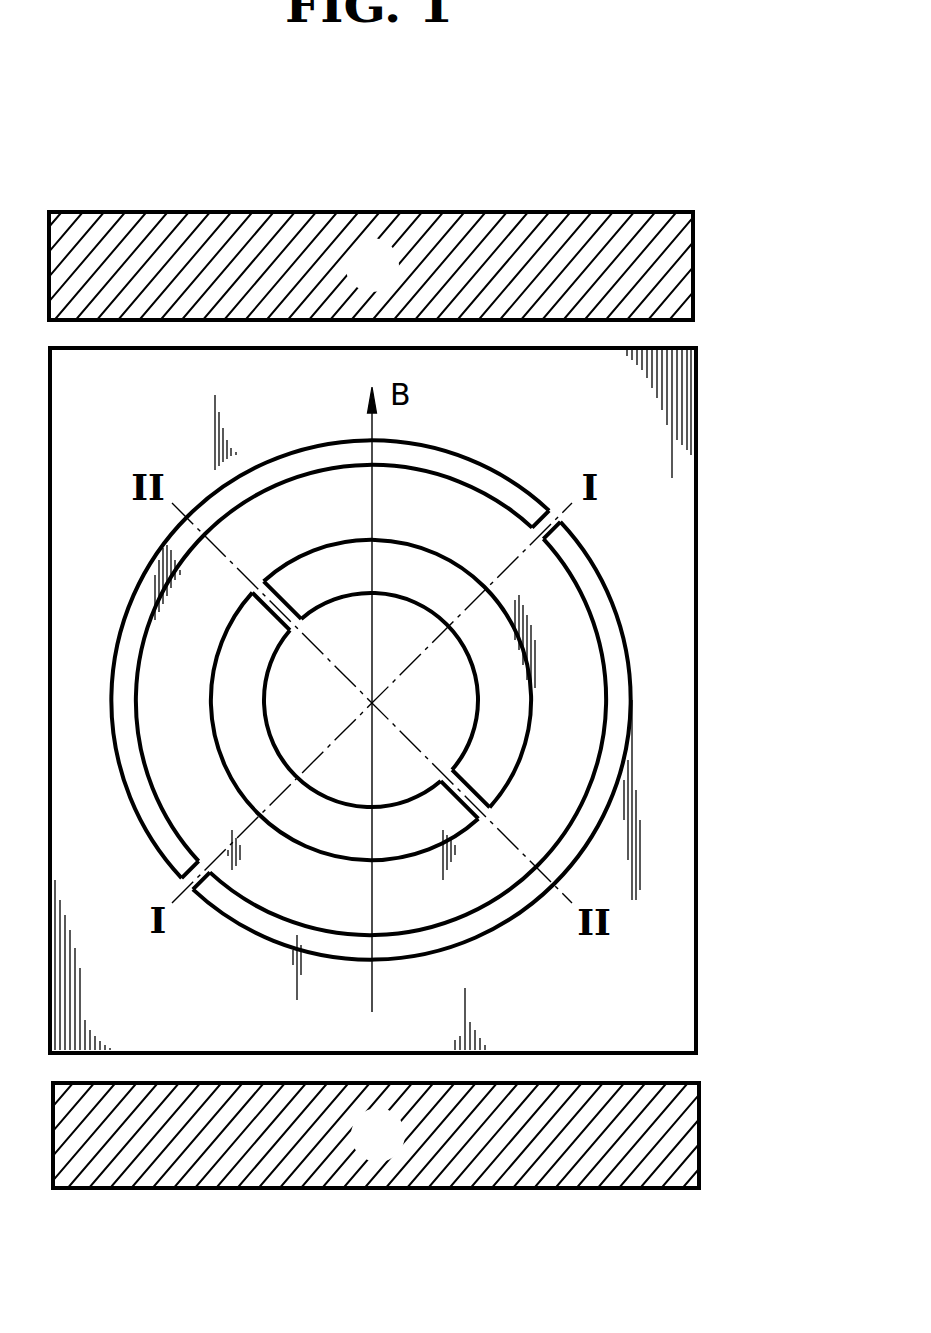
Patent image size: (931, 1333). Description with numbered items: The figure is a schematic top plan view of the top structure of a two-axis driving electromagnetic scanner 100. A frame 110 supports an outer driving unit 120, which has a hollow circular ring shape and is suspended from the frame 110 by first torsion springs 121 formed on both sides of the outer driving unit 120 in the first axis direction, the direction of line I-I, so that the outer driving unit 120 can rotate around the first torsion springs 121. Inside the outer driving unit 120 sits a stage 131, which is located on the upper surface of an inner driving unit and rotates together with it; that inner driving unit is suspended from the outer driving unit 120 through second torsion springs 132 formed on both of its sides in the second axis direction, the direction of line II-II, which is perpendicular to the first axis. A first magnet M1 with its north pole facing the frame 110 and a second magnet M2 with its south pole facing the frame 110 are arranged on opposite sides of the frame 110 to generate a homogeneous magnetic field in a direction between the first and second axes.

The 2-axis driving electromagnetic scanner 100 is at (485, 1289).
The frame 110 is at (672, 452).
The outer driving unit 120 is at (595, 689).
The first torsion springs 121 is at (552, 529).
The stage 131 is at (465, 708).
The second torsion springs 132 is at (483, 794).
The first magnet M1 is at (686, 1136).
The second magnet M2 is at (678, 268).